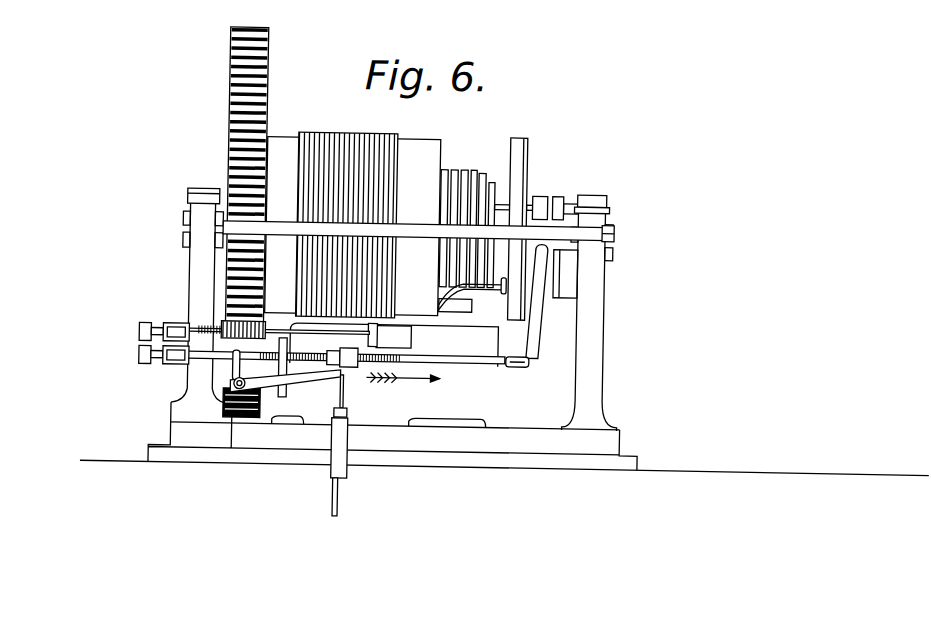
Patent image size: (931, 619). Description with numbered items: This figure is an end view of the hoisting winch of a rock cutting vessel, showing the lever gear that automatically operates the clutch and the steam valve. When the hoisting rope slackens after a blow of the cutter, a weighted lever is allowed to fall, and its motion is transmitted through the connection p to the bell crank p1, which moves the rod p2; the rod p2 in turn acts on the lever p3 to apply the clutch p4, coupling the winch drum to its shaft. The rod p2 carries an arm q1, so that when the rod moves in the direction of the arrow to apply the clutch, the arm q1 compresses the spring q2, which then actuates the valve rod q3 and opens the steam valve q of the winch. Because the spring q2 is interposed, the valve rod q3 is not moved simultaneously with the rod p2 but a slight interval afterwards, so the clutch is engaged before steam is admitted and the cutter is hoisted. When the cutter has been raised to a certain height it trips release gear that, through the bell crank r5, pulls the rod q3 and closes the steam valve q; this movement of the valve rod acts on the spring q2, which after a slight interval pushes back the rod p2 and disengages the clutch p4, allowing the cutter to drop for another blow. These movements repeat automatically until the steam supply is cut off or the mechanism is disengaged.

The connection p is at (342, 456).
The bell crank p1 is at (273, 382).
The rod p2 is at (480, 357).
The lever p3 is at (547, 330).
The clutch p4 is at (555, 199).
The steam valve q is at (413, 343).
The arm q1 is at (212, 358).
The spring q2 is at (244, 328).
The valve rod q3 is at (342, 334).
The bell crank r5 is at (164, 319).